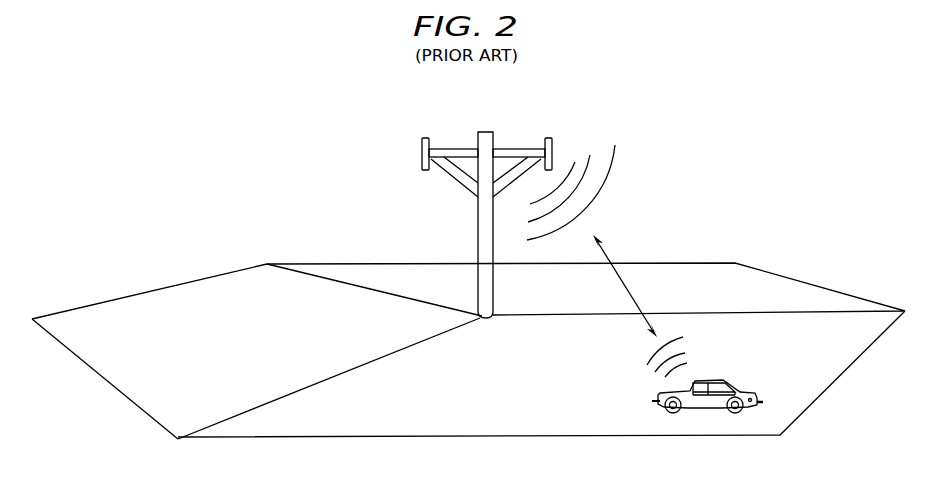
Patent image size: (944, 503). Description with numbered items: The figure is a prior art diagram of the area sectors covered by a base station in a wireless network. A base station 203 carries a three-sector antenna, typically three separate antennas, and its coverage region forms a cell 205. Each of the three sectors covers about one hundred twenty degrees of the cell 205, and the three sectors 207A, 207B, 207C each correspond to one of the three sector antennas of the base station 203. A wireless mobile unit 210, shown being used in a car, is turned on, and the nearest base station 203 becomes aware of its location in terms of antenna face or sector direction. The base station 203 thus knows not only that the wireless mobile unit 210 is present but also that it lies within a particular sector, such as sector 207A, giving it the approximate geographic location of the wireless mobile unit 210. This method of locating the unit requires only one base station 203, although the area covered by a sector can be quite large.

The base station 203 is at (478, 225).
The cell 205 is at (697, 185).
The sector 207A is at (560, 422).
The sector 207B is at (155, 305).
The sector 207C is at (797, 285).
The wireless mobile unit 210 is at (710, 380).